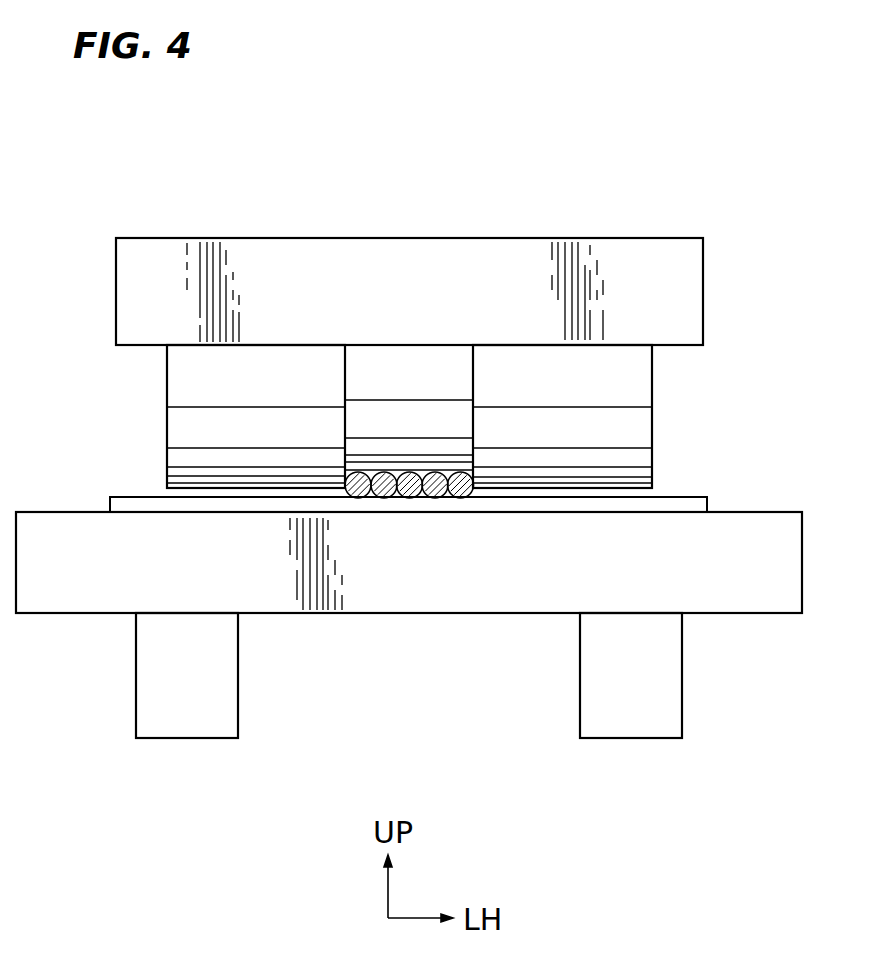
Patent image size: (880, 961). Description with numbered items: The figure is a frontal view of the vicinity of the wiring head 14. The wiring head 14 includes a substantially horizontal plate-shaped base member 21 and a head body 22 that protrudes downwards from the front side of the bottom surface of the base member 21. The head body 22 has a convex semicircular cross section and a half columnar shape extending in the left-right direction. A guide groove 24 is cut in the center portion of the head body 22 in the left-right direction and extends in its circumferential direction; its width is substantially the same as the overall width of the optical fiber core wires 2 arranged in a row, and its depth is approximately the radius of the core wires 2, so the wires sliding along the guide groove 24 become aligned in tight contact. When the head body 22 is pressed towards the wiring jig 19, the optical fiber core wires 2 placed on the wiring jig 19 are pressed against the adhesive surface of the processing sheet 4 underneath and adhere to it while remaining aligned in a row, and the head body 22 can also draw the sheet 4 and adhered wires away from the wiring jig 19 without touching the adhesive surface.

The optical fiber core wires 2 is at (460, 498).
The processing sheet 4 is at (131, 497).
The wiring head 14 is at (442, 311).
The wiring jig 19 is at (770, 512).
The base member 21 is at (640, 237).
The head body 22 is at (652, 395).
The guide groove 24 is at (420, 370).